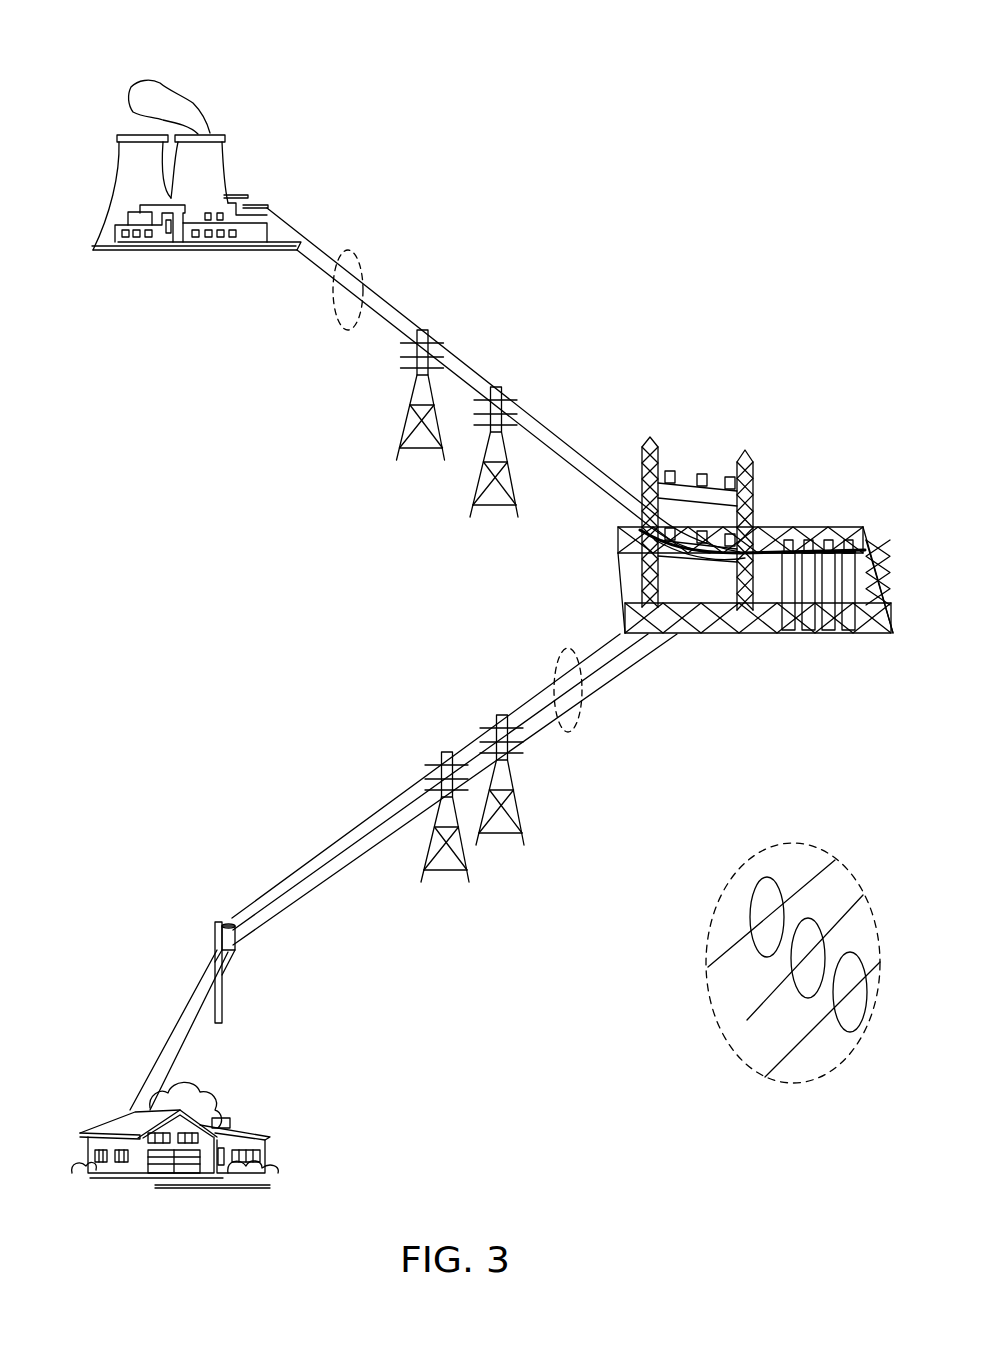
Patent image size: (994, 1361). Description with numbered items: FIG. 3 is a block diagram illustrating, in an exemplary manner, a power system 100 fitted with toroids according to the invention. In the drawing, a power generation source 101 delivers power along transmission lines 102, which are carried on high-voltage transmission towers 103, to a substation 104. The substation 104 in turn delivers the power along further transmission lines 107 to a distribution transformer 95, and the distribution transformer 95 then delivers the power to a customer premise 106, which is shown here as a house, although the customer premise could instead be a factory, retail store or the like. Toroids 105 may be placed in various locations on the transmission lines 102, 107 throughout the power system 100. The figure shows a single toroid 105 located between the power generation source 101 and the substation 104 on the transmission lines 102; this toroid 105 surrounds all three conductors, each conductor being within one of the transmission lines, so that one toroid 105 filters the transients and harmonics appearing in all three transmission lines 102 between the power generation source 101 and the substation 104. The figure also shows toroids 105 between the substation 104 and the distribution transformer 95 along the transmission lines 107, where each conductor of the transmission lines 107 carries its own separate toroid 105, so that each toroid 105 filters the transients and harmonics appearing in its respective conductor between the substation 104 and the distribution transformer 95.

The power system 100 is at (482, 80).
The power generation source 101 is at (232, 137).
The transmission lines 102 is at (571, 440).
The high-voltage transmission towers 103 is at (408, 606).
The substation 104 is at (755, 517).
The toroid 105 is at (852, 947).
The customer premise 106 is at (216, 1069).
The transmission lines 107 is at (586, 695).
The distribution transformer 95 is at (175, 930).